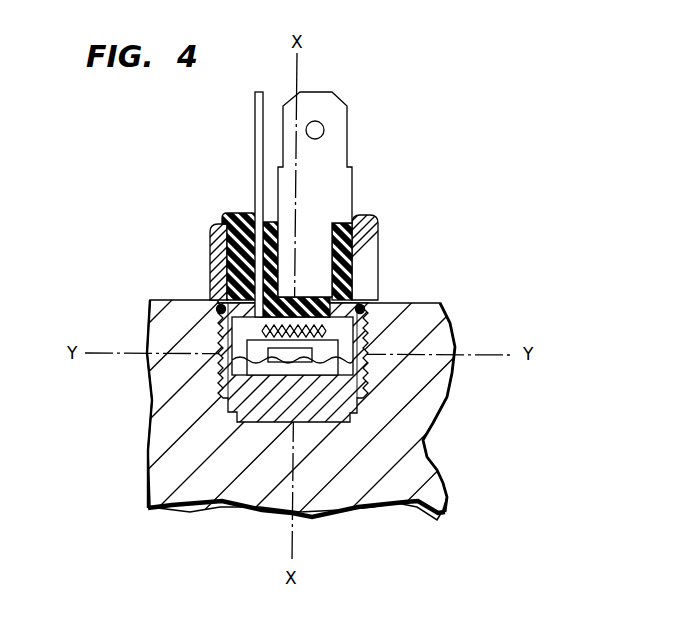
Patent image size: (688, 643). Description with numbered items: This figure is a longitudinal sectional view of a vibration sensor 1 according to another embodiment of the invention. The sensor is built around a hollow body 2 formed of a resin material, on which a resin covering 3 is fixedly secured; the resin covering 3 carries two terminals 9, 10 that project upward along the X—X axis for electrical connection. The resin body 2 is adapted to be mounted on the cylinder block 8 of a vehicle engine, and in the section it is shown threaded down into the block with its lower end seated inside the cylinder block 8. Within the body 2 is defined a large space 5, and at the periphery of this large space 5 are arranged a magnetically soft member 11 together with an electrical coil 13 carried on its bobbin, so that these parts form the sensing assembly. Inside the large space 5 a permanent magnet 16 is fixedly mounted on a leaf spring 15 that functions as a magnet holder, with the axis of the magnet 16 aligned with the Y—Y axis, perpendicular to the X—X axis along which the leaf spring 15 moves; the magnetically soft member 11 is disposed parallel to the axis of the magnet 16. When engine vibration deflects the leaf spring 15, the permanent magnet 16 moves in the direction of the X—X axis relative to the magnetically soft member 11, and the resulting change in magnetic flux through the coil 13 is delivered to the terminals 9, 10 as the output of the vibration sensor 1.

The vibration sensor 1 is at (388, 225).
The hollow body 2 is at (353, 387).
The resin covering 3 is at (245, 222).
The large space 5 is at (270, 377).
The cylinder block 8 is at (425, 468).
The terminal 9 is at (342, 131).
The terminal 10 is at (256, 108).
The magnetically soft member 11 is at (230, 296).
The electrical coil 13 is at (345, 340).
The leaf spring 15 is at (252, 362).
The permanent magnet 16 is at (310, 375).